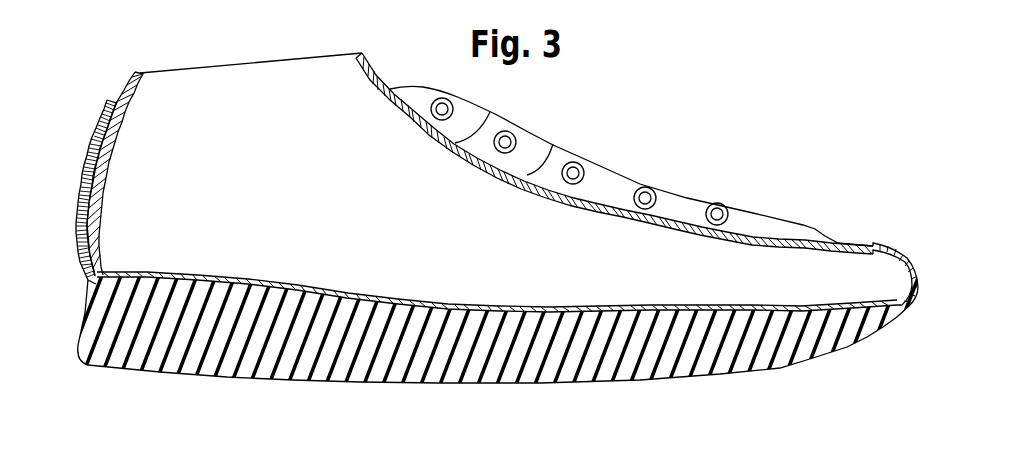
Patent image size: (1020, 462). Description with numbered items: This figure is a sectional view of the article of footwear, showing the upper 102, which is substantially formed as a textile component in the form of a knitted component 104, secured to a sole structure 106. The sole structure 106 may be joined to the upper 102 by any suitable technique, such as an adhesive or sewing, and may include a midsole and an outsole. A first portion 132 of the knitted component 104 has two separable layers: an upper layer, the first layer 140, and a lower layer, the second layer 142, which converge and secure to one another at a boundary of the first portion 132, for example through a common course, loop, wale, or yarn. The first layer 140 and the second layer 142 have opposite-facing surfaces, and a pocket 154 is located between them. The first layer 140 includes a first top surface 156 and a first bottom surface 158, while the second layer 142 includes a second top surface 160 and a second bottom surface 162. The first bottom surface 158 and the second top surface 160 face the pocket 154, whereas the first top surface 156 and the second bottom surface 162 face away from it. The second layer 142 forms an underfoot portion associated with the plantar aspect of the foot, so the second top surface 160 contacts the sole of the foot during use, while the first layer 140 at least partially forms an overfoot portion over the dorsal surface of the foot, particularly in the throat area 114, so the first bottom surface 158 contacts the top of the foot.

The upper 102 is at (806, 226).
The knitted component 104 is at (612, 170).
The sole structure 106 is at (704, 372).
The throat area 114 is at (550, 146).
The first portion 132 is at (366, 64).
The first layer 140 is at (488, 113).
The second layer 142 is at (258, 280).
The pocket 154 is at (478, 246).
The first top surface 156 is at (683, 203).
The first bottom surface 158 is at (590, 215).
The second top surface 160 is at (680, 300).
The second bottom surface 162 is at (588, 320).